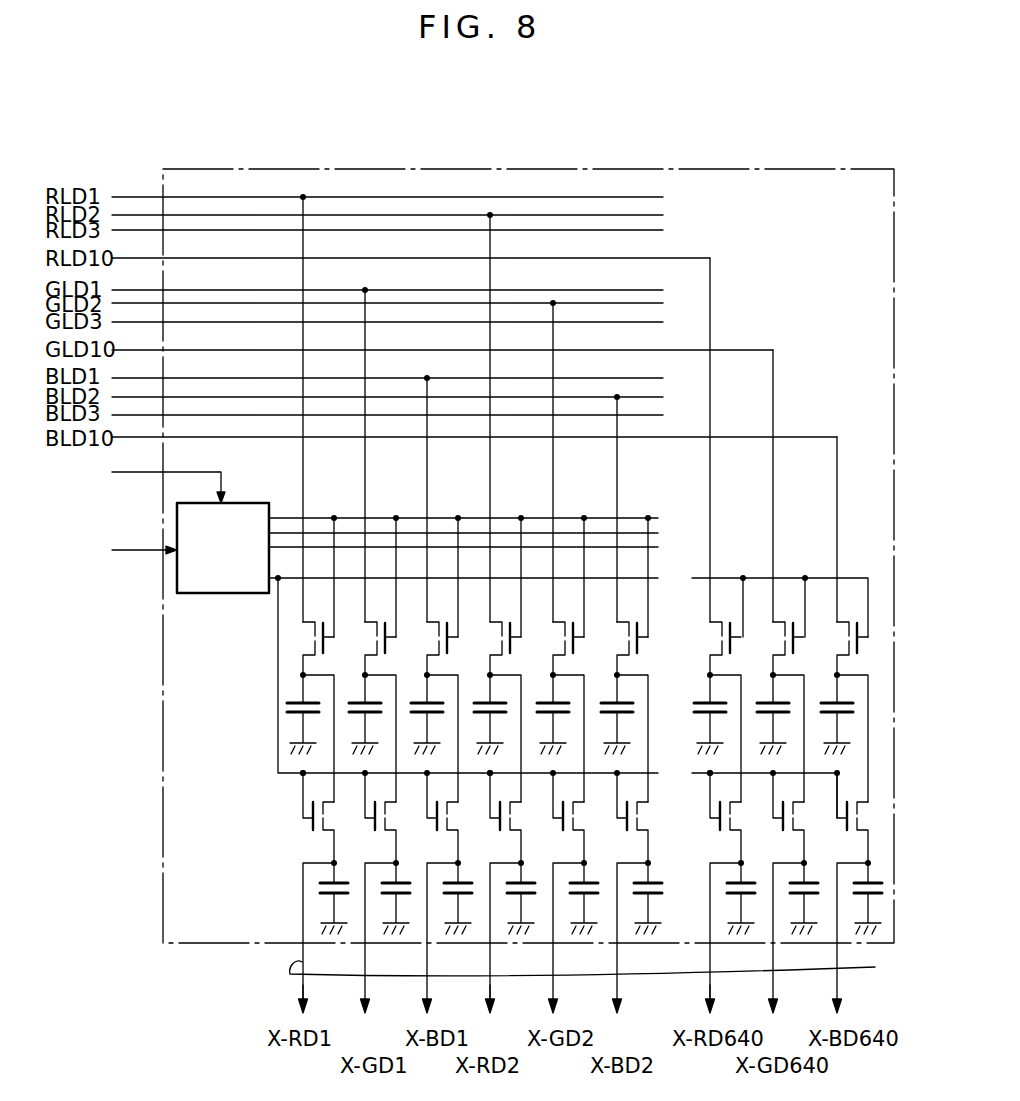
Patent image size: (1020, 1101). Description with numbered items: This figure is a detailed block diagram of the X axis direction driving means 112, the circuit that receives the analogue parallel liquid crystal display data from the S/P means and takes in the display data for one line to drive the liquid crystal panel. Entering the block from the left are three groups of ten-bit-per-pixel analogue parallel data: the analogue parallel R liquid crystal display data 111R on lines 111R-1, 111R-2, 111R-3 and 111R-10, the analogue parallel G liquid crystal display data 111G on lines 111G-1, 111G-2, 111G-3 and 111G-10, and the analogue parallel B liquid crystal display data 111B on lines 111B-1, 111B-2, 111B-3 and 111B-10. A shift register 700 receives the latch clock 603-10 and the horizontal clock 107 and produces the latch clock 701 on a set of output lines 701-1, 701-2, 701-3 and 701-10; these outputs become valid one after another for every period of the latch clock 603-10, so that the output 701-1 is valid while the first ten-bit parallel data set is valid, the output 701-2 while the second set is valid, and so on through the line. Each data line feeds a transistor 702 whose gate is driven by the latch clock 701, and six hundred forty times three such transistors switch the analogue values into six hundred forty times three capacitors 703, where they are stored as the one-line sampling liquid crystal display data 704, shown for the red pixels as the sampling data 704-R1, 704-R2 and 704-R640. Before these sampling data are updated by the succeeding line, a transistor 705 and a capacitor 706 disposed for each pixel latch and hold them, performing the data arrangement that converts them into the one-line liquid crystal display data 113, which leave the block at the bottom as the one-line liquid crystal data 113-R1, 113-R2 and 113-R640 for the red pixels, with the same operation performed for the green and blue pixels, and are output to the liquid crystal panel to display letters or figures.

The analogue parallel R liquid crystal display data 111R is at (148, 262).
The analogue parallel R liquid crystal display data line 111R-1 is at (188, 197).
The analogue parallel R liquid crystal display data line 111R-2 is at (248, 215).
The analogue parallel R liquid crystal display data line 111R-3 is at (343, 230).
The analogue parallel R liquid crystal display data line 111R-10 is at (503, 258).
The analogue parallel G liquid crystal display data 111G is at (146, 350).
The analogue parallel G liquid crystal display data line 111G-1 is at (170, 290).
The analogue parallel G liquid crystal display data line 111G-2 is at (288, 290).
The analogue parallel G liquid crystal display data line 111G-3 is at (366, 303).
The analogue parallel G liquid crystal display data line 111G-10 is at (508, 350).
The analogue parallel B liquid crystal display data 111B is at (145, 438).
The analogue parallel B liquid crystal display data line 111B-1 is at (170, 378).
The analogue parallel B liquid crystal display data line 111B-2 is at (200, 397).
The analogue parallel B liquid crystal display data line 111B-3 is at (343, 397).
The analogue parallel B liquid crystal display data line 111B-10 is at (460, 438).
The X axis direction driving means 112 is at (768, 169).
The latch clock 603-10 is at (140, 472).
The shift register 700 is at (233, 503).
The latch clock 701 is at (297, 514).
The latch clock 701-1 is at (313, 518).
The latch clock 701-2 is at (350, 533).
The latch clock 701-3 is at (410, 547).
The latch clock 701-10 is at (592, 578).
The horizontal clock 107 is at (135, 548).
The transistor 702 is at (312, 637).
The capacitor 703 is at (287, 707).
The one-line sampling liquid crystal display data 704 is at (870, 750).
The sampling data 704-R1 is at (348, 776).
The sampling data 704-R2 is at (535, 776).
The sampling data 704-R640 is at (755, 776).
The transistor 705 is at (302, 806).
The capacitor 706 is at (328, 883).
The one-line liquid crystal display data 113 is at (290, 974).
The one-line liquid crystal data 113-R1 is at (366, 1053).
The one-line liquid crystal data 113-R2 is at (492, 1053).
The one-line liquid crystal data 113-R640 is at (774, 1053).